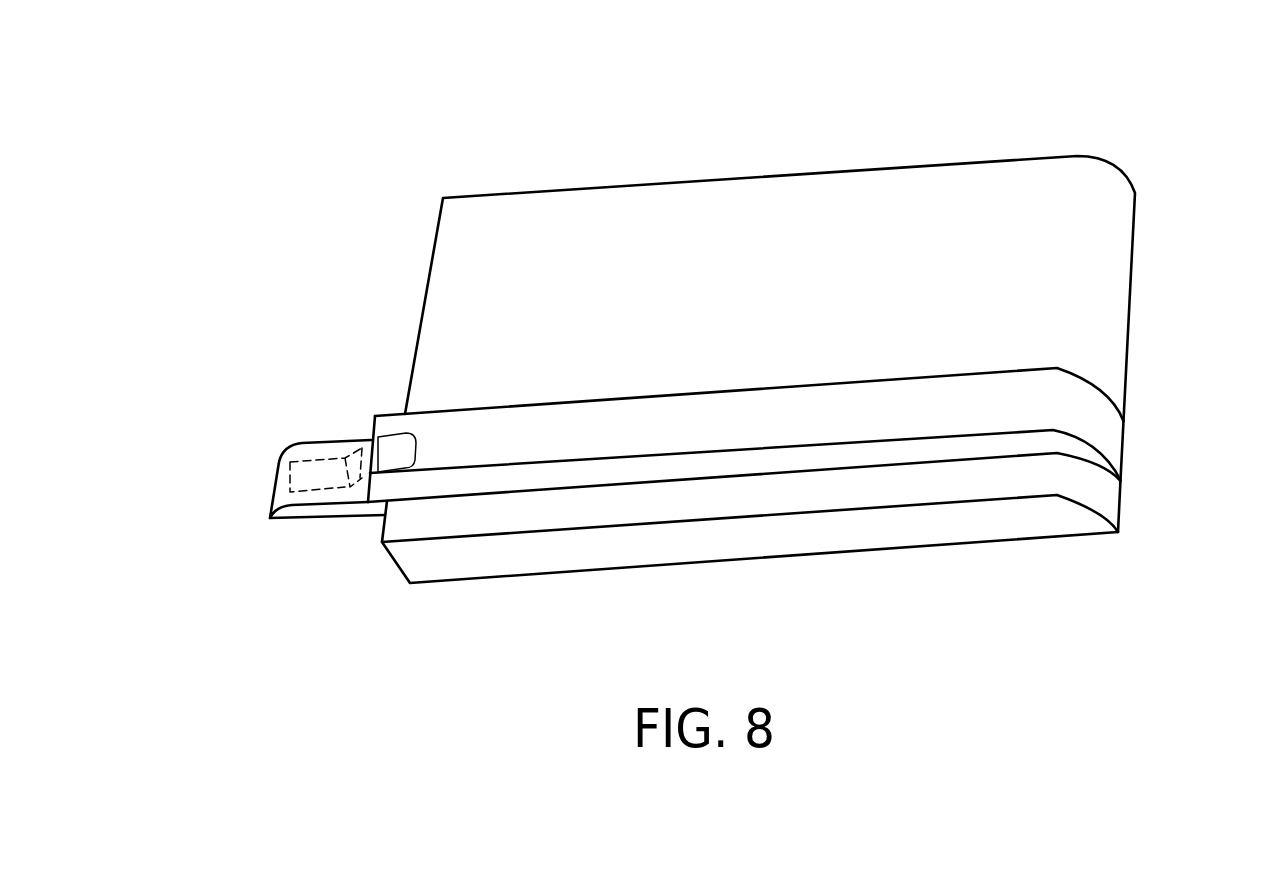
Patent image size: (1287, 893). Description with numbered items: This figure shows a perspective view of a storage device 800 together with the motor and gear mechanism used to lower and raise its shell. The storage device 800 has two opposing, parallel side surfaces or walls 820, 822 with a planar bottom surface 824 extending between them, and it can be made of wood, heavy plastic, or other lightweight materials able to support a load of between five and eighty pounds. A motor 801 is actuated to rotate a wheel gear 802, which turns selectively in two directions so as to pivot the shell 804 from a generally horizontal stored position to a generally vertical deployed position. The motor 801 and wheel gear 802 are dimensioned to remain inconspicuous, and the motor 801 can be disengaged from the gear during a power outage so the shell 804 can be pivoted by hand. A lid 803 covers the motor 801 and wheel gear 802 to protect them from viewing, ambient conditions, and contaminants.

The storage device 800 is at (512, 153).
The side wall 820 is at (977, 157).
The planar bottom surface 824 is at (788, 284).
The shell 804 is at (1134, 256).
The side wall 822 is at (976, 518).
The lid 803 is at (268, 520).
The motor 801 is at (312, 473).
The wheel gear 802 is at (390, 445).